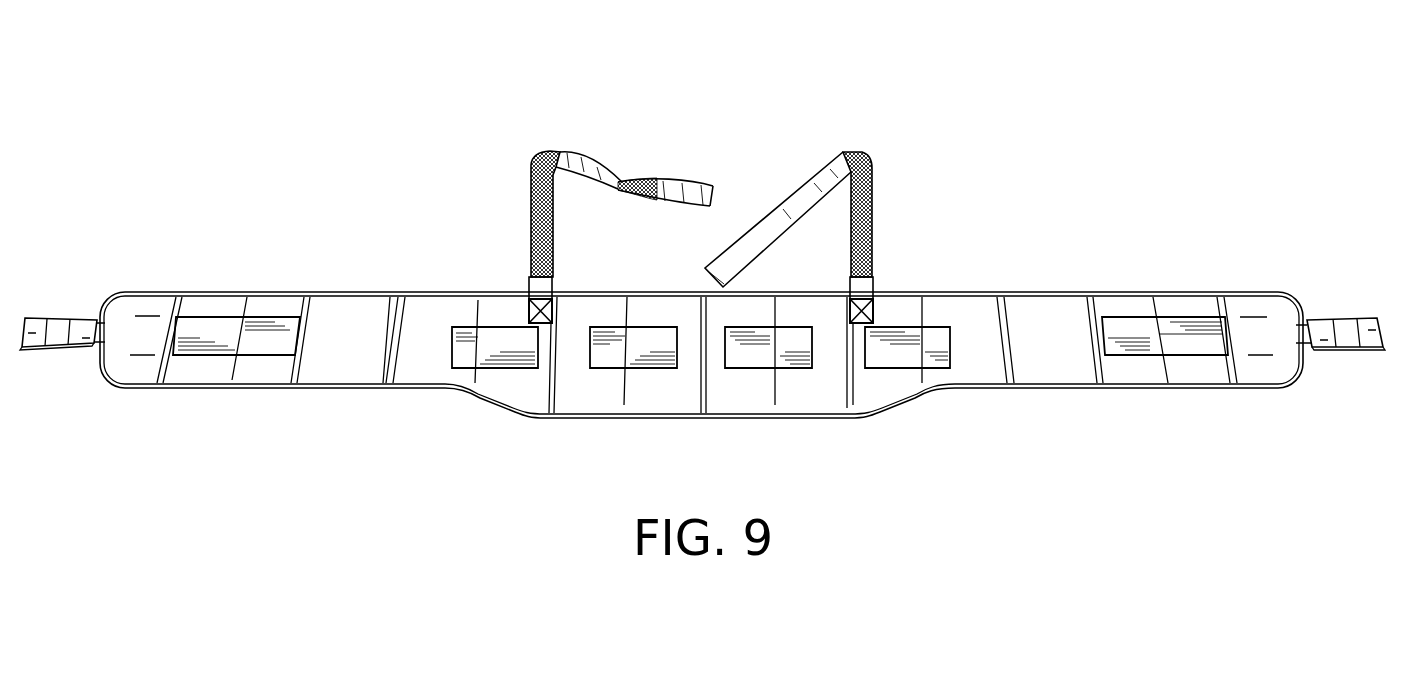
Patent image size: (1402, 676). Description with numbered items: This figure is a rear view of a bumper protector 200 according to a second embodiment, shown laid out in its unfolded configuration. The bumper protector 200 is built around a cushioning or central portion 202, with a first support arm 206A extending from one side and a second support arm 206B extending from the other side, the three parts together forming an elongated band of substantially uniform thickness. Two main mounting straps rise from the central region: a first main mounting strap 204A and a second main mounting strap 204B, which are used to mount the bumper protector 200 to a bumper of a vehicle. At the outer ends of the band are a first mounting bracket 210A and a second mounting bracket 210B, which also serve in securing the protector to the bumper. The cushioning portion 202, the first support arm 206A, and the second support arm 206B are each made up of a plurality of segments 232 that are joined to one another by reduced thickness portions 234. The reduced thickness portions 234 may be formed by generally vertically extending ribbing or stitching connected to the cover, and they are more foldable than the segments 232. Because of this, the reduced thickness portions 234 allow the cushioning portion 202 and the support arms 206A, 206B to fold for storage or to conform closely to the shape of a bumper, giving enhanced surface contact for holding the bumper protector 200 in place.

The bumper protector 200 is at (366, 177).
The cushioning portion 202 is at (664, 300).
The first main mounting strap 204A is at (873, 226).
The second main mounting strap 204B is at (532, 204).
The first support arm 206A is at (1120, 293).
The second support arm 206B is at (279, 292).
The first mounting bracket 210A is at (1340, 318).
The second mounting bracket 210B is at (67, 316).
The segments 232 is at (232, 302).
The reduced thickness portions 234 is at (158, 377).